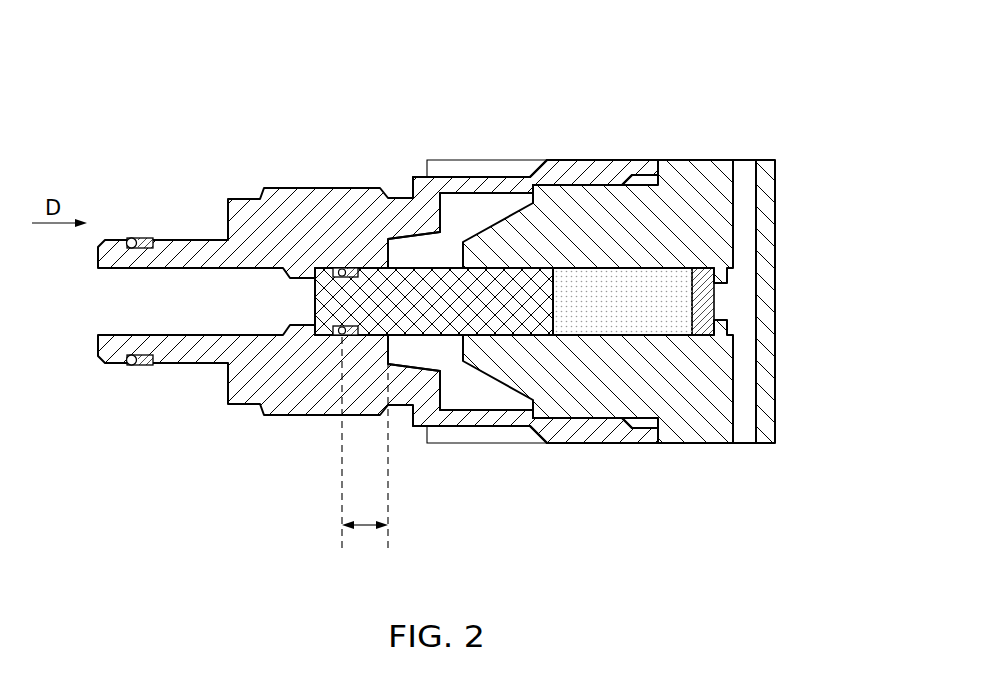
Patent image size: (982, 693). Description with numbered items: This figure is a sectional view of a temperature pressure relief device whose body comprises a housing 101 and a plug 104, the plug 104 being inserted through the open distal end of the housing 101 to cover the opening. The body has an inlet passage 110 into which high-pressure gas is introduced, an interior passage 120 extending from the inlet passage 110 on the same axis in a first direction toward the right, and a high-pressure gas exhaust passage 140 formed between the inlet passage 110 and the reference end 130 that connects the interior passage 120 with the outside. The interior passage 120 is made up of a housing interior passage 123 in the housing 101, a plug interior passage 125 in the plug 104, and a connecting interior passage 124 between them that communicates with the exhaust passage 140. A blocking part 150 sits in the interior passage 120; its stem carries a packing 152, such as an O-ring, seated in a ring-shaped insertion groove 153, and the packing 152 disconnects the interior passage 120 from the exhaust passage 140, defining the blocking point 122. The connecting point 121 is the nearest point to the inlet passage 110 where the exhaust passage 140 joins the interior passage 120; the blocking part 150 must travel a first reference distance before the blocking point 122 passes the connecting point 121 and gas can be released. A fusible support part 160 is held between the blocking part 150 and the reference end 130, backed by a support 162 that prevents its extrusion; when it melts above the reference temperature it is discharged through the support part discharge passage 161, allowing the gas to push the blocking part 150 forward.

The housing 101 is at (498, 176).
The plug 104 is at (690, 160).
The inlet passage 110 is at (120, 303).
The interior passage 120 is at (573, 527).
The connecting point 121 is at (388, 336).
The blocking point 122 is at (324, 335).
The housing interior passage 123 is at (460, 336).
The connecting interior passage 124 is at (510, 336).
The plug interior passage 125 is at (566, 335).
The reference end 130 is at (713, 269).
The high-pressure gas exhaust passage 140 is at (480, 398).
The blocking part 150 is at (294, 286).
The packing 152 is at (313, 336).
The insertion groove 153 is at (352, 270).
The support part 160 is at (655, 325).
The support part discharge passage 161 is at (744, 178).
The support 162 is at (714, 300).